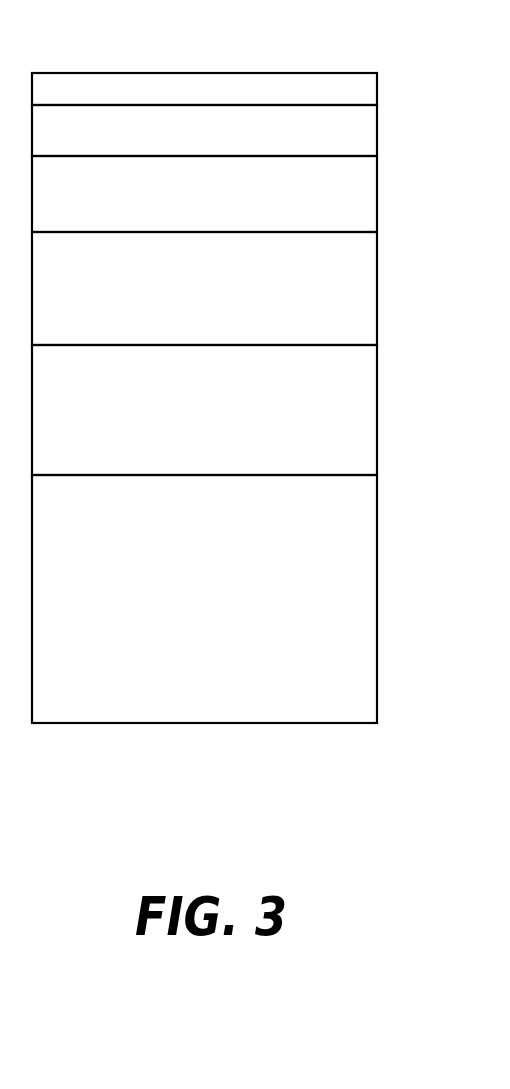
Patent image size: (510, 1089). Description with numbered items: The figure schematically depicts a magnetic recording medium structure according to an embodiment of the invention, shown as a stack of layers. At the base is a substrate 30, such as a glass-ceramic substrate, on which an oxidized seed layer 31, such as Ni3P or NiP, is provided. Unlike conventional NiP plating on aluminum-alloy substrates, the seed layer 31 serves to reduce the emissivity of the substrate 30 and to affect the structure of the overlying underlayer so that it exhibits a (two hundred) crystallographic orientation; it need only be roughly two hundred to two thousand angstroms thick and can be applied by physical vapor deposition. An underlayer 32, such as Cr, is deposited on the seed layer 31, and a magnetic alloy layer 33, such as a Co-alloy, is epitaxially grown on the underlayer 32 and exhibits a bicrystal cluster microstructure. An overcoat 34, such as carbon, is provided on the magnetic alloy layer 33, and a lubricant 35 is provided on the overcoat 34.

The substrate 30 is at (377, 660).
The seed layer 31 is at (377, 418).
The underlayer 32 is at (377, 288).
The magnetic alloy layer 33 is at (377, 188).
The overcoat 34 is at (377, 132).
The lubricant 35 is at (377, 85).